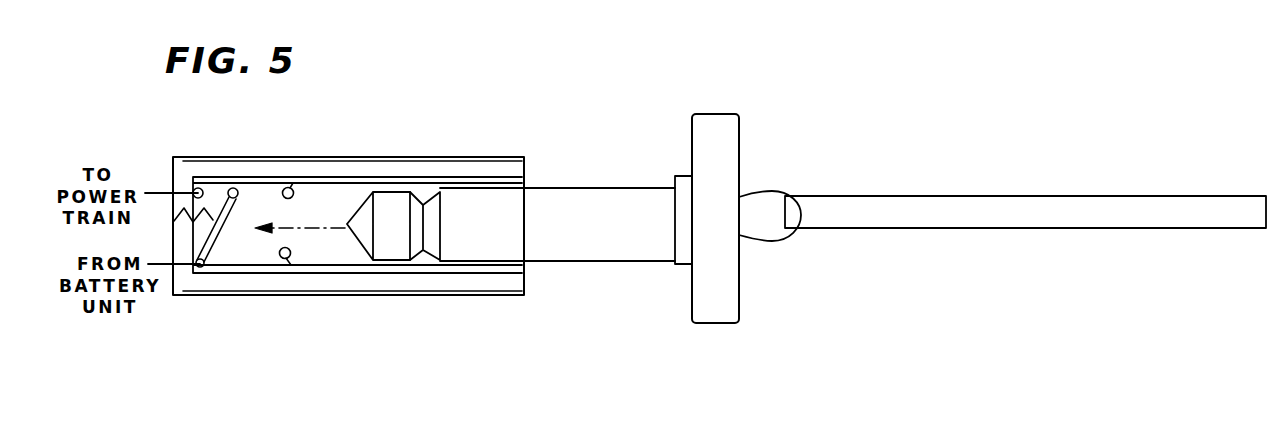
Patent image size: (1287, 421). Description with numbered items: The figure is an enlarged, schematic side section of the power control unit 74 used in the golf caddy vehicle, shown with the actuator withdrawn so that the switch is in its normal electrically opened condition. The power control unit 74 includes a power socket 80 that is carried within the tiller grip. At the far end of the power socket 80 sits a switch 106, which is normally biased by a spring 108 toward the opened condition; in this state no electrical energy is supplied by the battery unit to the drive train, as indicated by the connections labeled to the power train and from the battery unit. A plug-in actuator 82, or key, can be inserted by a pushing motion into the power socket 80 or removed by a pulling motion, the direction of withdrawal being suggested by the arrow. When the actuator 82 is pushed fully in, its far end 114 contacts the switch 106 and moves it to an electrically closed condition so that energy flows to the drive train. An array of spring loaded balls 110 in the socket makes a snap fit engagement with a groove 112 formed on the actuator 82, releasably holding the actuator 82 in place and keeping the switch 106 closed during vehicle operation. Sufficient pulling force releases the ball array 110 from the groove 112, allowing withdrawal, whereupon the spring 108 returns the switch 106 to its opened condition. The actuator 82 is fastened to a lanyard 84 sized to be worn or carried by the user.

The power control unit 74 is at (420, 124).
The power socket 80 is at (415, 180).
The plug-in actuator 82 is at (585, 196).
The lanyard 84 is at (902, 212).
The switch 106 is at (247, 195).
The spring 108 is at (218, 188).
The spring loaded balls 110 is at (294, 188).
The groove 112 is at (433, 259).
The far end of the actuator 114 is at (366, 238).